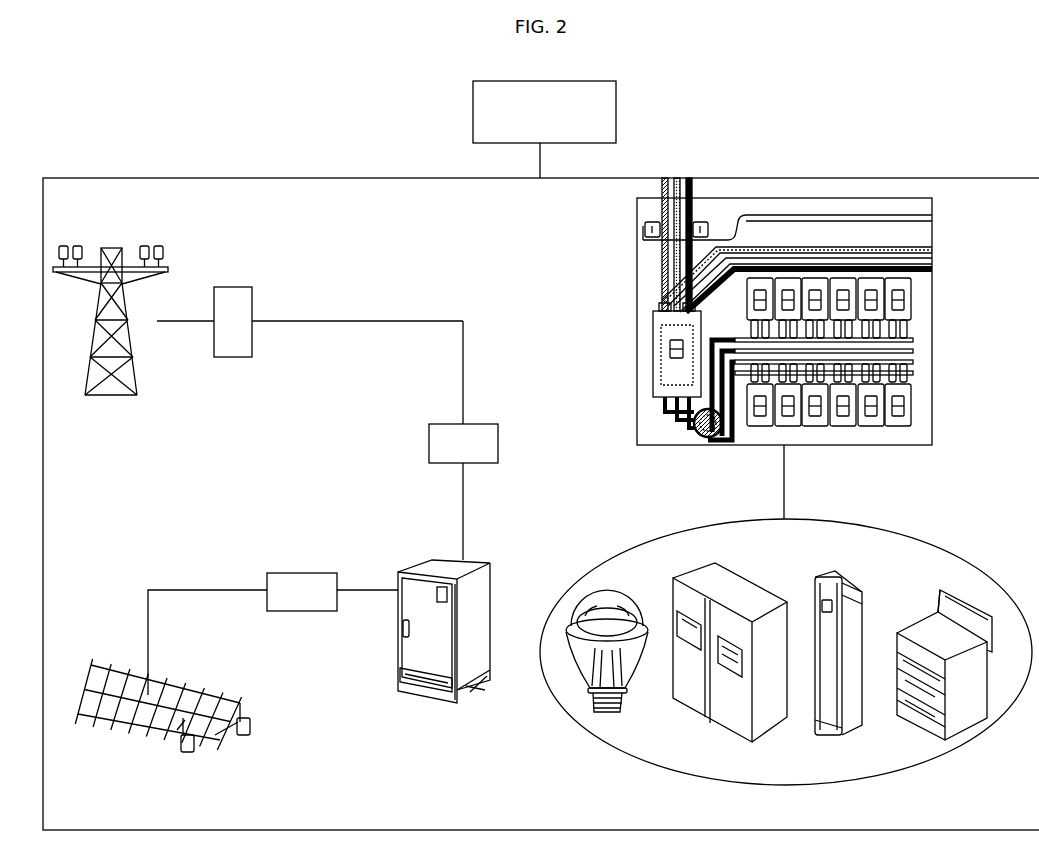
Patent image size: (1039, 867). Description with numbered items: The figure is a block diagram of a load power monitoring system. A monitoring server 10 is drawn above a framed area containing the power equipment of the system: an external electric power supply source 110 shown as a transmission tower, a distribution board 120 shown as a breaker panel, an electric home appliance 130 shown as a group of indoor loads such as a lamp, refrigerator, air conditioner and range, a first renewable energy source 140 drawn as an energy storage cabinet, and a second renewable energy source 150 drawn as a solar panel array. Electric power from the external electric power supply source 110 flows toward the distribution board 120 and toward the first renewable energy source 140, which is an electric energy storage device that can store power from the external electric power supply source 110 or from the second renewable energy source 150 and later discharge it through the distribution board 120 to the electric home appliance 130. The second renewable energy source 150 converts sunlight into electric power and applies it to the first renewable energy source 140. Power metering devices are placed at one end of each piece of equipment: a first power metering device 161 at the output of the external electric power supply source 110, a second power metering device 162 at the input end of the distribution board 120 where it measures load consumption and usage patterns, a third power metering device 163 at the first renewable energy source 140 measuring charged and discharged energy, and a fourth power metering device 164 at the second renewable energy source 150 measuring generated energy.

The monitoring server 10 is at (616, 113).
The external electric power supply source 110 is at (111, 247).
The distribution board 120 is at (932, 322).
The electric home appliance 130 is at (927, 544).
The first renewable energy source 140 is at (431, 704).
The second renewable energy source 150 is at (203, 686).
The first power metering device 161 is at (233, 287).
The second power metering device 162 is at (708, 438).
The third power metering device 163 is at (483, 424).
The fourth power metering device 164 is at (302, 573).